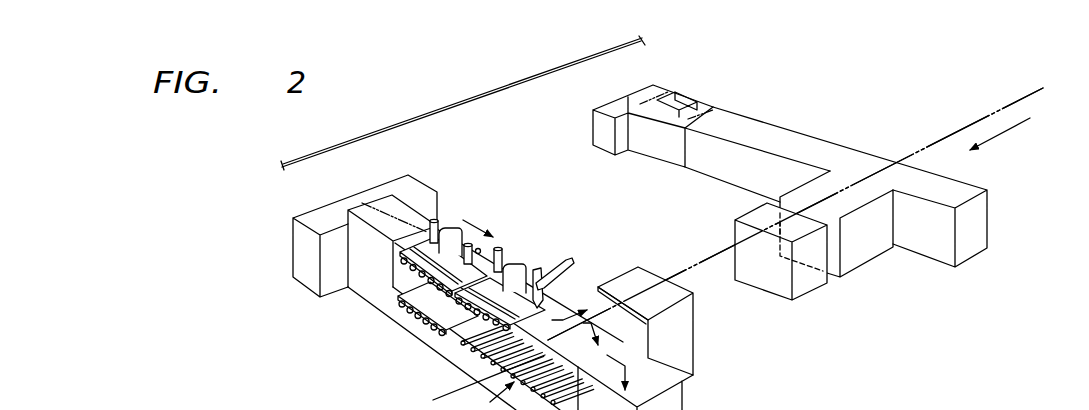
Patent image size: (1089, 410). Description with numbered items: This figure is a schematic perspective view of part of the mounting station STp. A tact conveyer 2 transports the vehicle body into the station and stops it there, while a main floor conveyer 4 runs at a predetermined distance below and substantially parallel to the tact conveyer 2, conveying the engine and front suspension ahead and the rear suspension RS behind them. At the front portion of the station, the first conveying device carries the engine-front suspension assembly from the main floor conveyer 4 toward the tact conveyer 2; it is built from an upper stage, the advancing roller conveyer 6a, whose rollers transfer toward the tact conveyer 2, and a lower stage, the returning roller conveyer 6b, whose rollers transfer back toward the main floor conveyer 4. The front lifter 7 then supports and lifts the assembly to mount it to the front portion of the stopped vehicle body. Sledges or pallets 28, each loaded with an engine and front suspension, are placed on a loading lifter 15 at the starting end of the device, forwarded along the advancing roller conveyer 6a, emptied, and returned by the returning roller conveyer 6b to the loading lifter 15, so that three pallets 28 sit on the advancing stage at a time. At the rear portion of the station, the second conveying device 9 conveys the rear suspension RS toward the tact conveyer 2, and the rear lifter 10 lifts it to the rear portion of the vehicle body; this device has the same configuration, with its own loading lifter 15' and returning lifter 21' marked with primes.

The tact conveyer 2 is at (1011, 107).
The main floor conveyer 4 is at (480, 92).
The advancing roller conveyer 6a is at (493, 322).
The returning roller conveyer 6b is at (512, 342).
The front lifter 7 is at (698, 372).
The second conveying device 9 is at (807, 136).
The rear lifter 10 is at (810, 292).
The loading lifter 15 is at (359, 259).
The loading lifter 15' is at (653, 145).
The returning lifter 21' is at (924, 224).
The pallet 28 is at (480, 257).
The rear suspension RS is at (694, 91).
The mounting station STp is at (504, 140).